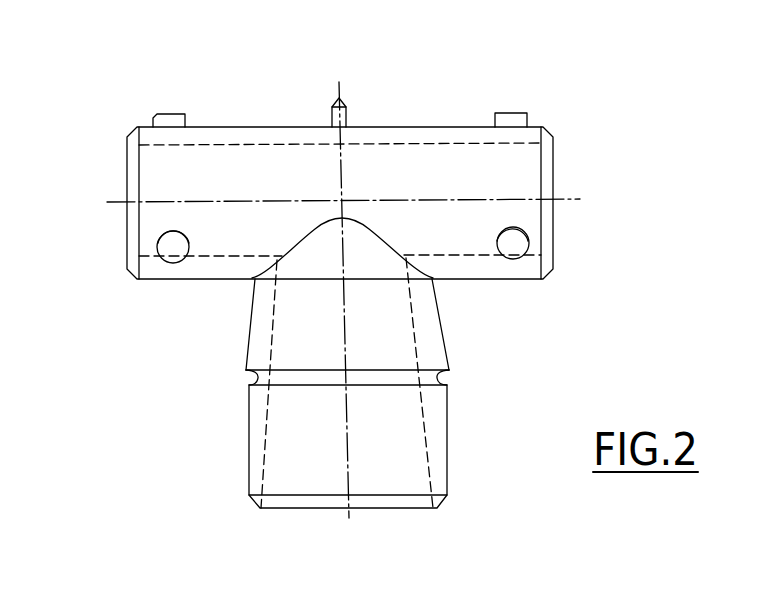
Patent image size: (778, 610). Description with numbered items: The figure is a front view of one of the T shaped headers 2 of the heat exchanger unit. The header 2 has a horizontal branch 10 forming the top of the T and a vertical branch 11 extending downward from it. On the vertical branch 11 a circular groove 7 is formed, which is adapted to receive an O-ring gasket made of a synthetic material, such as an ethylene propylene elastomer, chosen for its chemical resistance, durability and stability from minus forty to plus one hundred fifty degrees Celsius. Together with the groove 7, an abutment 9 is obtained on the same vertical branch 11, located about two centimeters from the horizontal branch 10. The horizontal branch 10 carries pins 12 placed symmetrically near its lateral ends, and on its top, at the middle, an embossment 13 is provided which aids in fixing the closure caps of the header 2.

The T shaped header 2 is at (192, 324).
The circular groove 7 is at (437, 377).
The abutment 9 is at (247, 378).
The horizontal branch 10 is at (236, 127).
The vertical branch 11 is at (407, 440).
The pins 12 is at (176, 232).
The embossment 13 is at (346, 117).